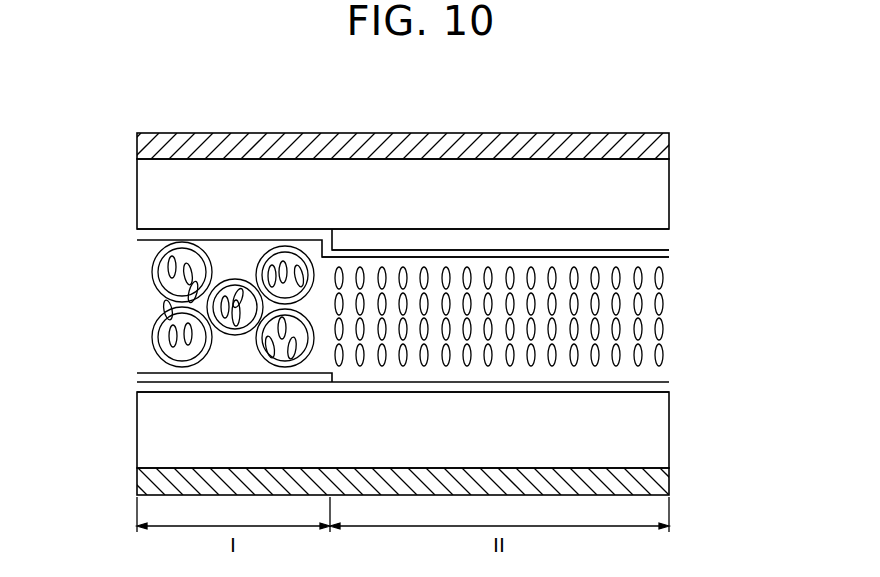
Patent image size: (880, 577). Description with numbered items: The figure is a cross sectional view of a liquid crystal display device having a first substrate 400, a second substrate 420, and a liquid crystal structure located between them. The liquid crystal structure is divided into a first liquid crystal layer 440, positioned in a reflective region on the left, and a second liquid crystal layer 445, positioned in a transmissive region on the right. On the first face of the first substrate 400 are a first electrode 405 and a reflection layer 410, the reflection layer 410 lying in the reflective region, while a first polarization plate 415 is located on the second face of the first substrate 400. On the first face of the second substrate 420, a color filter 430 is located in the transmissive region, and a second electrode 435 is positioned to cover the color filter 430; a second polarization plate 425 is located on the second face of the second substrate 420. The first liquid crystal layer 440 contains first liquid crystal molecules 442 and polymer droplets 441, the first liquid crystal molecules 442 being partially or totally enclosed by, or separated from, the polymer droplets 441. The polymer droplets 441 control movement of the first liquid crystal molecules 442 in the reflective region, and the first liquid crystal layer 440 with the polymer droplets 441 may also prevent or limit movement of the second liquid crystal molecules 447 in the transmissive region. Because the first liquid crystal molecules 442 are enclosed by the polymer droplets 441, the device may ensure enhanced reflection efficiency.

The first substrate 400 is at (668, 432).
The first electrode 405 is at (668, 385).
The reflection layer 410 is at (136, 373).
The first polarization plate 415 is at (668, 480).
The second substrate 420 is at (668, 190).
The second polarization plate 425 is at (668, 145).
The color filter 430 is at (668, 238).
The second electrode 435 is at (668, 258).
The first liquid crystal layer 440 is at (170, 304).
The polymer droplets 441 is at (158, 285).
The first liquid crystal molecules 442 is at (170, 262).
The second liquid crystal layer 445 is at (560, 321).
The second liquid crystal molecules 447 is at (660, 303).